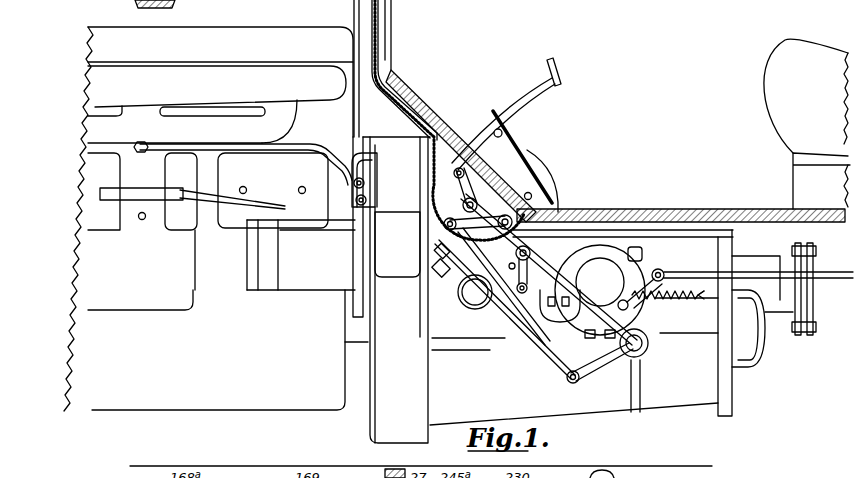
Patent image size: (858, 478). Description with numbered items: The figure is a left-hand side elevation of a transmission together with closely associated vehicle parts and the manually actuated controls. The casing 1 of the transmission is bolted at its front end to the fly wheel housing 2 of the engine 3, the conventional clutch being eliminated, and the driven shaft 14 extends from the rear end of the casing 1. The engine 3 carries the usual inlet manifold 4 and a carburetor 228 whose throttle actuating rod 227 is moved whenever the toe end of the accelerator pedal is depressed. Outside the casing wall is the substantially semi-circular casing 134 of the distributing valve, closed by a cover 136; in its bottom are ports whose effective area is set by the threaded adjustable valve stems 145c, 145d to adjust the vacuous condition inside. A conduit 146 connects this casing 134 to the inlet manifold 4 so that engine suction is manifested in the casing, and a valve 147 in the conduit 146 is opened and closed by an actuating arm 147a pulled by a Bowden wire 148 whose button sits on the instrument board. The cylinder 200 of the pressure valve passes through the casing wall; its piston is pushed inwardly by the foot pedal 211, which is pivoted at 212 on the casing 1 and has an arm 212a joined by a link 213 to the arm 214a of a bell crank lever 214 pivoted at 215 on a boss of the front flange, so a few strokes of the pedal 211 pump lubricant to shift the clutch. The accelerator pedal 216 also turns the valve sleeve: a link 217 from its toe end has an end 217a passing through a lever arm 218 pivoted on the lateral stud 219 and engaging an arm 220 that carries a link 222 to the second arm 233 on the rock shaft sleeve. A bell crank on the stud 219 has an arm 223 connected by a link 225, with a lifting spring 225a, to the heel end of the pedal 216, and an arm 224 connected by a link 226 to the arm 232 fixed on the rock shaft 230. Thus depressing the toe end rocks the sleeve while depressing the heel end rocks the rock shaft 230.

The casing of the transmission 1 is at (687, 401).
The fly wheel housing 2 is at (372, 429).
The engine 3 is at (237, 398).
The inlet manifold 4 is at (265, 124).
The driven shaft 14 is at (786, 300).
The semi-circular casing 134 is at (626, 268).
The cover 136 is at (621, 298).
The adjustable valve stem 145c is at (560, 335).
The adjustable valve stem 145d is at (556, 340).
The conduit 146 is at (272, 149).
The valve 147 is at (354, 186).
The actuating arm 147a is at (356, 203).
The Bowden wire 148 is at (372, 12).
The cylinder 200 is at (478, 307).
The foot pedal 211 is at (530, 93).
The pivot 212 is at (648, 355).
The arm 212a is at (604, 362).
The link 213 is at (565, 352).
The bell crank lever 214 is at (436, 264).
The arm of bell crank lever 214a is at (445, 283).
The pivot 215 is at (438, 253).
The accelerator pedal 216 is at (515, 143).
The link 217 is at (485, 142).
The link end 217a is at (453, 145).
The lever arm 218 is at (466, 192).
The lateral stud 219 is at (445, 206).
The arm 220 is at (452, 172).
The link 222 is at (461, 146).
The arm of bell crank 223 is at (538, 180).
The arm of bell crank 224 is at (445, 222).
The link 225 is at (537, 216).
The spring 225a is at (535, 208).
The link 226 is at (461, 294).
The throttle actuating rod 227 is at (243, 177).
The carburetor 228 is at (172, 250).
The rock shaft 230 is at (600, 221).
The arm 232 is at (585, 280).
The second arm 233 is at (566, 258).